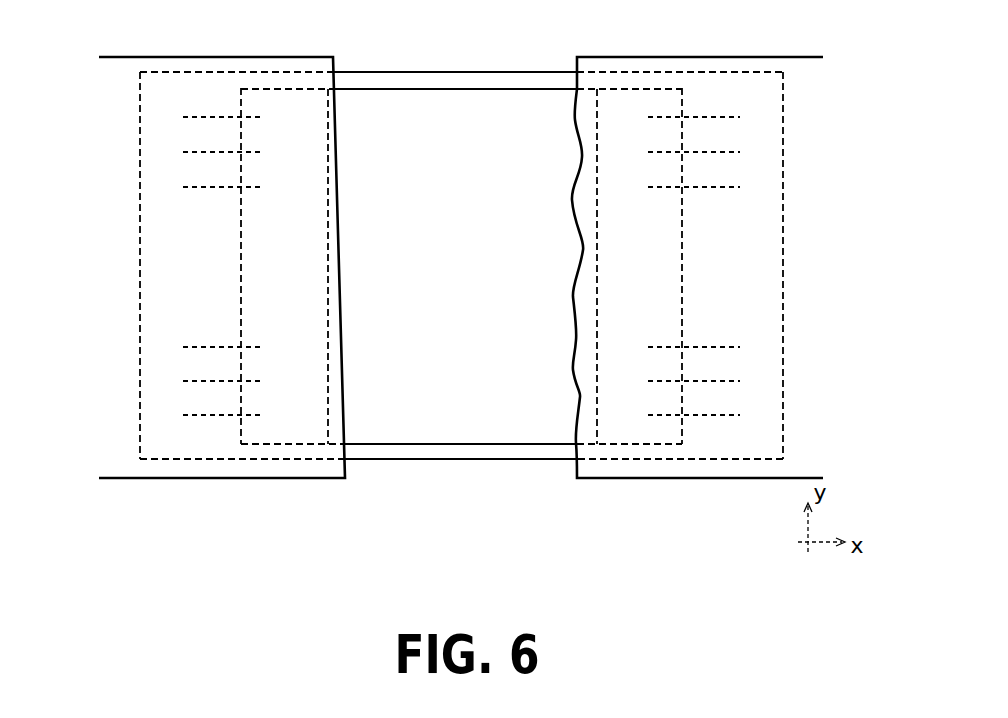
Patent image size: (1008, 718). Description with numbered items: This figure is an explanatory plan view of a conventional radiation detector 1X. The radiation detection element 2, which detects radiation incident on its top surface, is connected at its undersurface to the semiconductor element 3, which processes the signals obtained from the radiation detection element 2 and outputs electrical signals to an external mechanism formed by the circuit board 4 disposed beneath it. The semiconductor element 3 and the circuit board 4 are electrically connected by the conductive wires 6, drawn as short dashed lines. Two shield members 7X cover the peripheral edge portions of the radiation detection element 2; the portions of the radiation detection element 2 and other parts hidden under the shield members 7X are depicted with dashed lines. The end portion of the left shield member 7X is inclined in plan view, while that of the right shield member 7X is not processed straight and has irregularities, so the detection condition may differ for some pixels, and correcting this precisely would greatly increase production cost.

The radiation detector 1X is at (86, 68).
The shield member 7X is at (293, 57).
The radiation detection element 2 is at (425, 444).
The semiconductor element 3 is at (241, 245).
The circuit board 4 is at (783, 260).
The conductive wire 6 is at (215, 347).